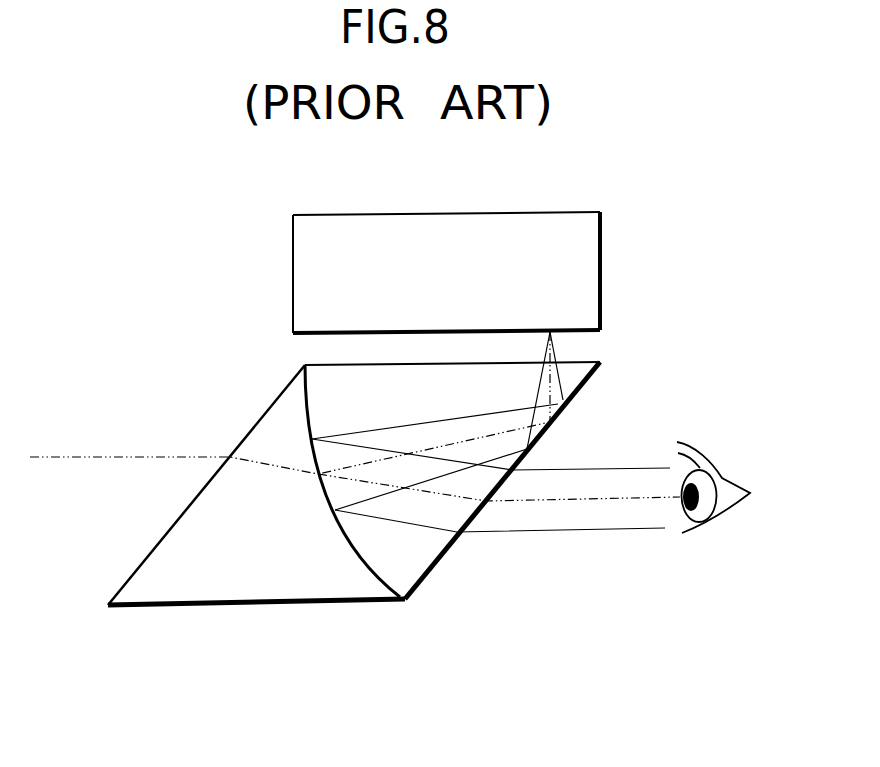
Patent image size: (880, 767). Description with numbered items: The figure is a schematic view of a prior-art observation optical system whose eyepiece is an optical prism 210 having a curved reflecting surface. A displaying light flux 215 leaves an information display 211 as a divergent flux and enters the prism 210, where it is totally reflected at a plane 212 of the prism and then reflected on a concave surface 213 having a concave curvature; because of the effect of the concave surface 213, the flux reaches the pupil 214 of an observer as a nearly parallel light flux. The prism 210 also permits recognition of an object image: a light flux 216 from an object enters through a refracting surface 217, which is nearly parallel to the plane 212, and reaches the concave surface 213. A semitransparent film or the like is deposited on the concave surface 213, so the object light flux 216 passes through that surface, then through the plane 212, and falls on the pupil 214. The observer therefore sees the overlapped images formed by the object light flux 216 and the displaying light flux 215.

The optical prism 210 is at (400, 567).
The information display 211 is at (293, 270).
The plane 212 is at (448, 549).
The concave surface 213 is at (302, 395).
The pupil 214 is at (722, 473).
The displaying light flux 215 is at (590, 376).
The light flux from an object 216 is at (75, 456).
The refracting surface 217 is at (150, 555).